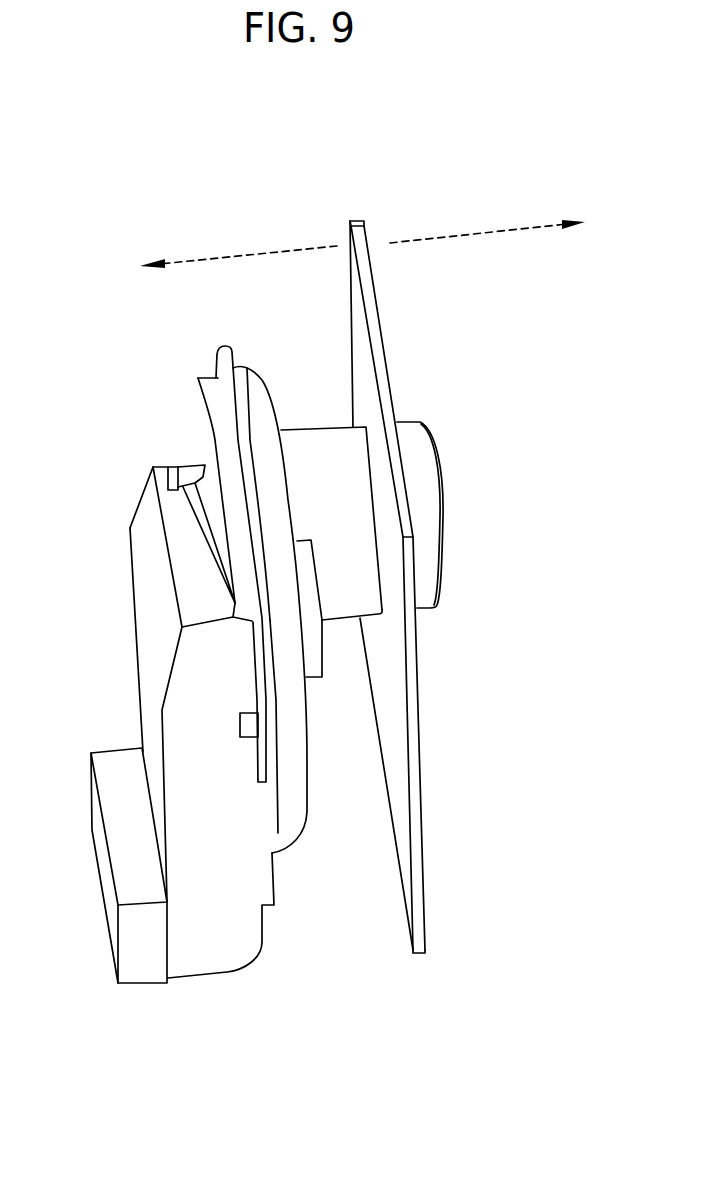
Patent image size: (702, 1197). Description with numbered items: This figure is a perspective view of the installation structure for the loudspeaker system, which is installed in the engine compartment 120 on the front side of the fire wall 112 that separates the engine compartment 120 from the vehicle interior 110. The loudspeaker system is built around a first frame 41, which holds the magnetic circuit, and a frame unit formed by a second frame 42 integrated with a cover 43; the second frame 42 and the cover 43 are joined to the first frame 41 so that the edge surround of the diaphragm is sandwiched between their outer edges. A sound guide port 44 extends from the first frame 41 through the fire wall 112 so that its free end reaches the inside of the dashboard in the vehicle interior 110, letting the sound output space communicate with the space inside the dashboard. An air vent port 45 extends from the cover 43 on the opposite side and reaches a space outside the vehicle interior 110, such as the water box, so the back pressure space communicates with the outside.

The first frame 41 is at (297, 818).
The second frame 42 is at (200, 427).
The cover 43 is at (140, 631).
The sound guide port 44 is at (310, 446).
The air vent port 45 is at (145, 968).
The vehicle interior 110 is at (494, 210).
The fire wall 112 is at (422, 740).
The engine compartment 120 is at (203, 234).